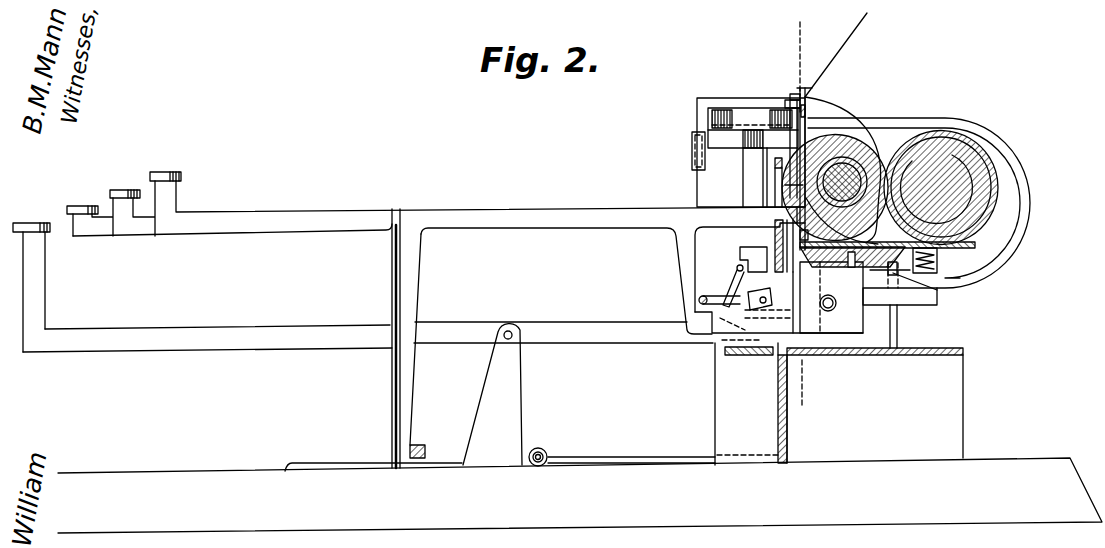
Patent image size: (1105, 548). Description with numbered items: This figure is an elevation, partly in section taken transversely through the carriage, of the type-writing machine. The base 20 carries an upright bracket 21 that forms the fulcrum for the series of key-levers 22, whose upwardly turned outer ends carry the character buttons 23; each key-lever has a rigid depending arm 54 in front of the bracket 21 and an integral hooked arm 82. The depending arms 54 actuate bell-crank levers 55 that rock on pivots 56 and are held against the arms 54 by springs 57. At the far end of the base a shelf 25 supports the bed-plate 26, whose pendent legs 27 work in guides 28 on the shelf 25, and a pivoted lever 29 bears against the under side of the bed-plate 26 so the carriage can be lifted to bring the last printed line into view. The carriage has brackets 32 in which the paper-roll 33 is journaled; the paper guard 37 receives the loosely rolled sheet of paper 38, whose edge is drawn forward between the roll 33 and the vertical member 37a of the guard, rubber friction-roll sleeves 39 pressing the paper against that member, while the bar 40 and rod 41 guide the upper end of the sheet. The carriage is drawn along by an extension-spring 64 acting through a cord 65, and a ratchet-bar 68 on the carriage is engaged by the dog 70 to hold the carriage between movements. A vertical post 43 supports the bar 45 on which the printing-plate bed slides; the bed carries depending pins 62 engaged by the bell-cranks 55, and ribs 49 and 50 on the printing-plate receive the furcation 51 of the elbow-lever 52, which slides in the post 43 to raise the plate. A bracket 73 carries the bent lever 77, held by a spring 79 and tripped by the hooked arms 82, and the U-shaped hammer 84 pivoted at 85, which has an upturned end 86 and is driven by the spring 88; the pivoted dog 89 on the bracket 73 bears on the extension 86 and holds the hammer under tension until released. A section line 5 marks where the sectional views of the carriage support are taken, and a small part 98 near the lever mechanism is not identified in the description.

The section line 5 is at (802, 217).
The base 20 is at (580, 495).
The upright bracket 21 is at (391, 292).
The key-levers 22 is at (486, 228).
The buttons 23 is at (168, 166).
The shelf 25 is at (940, 330).
The bed-plate 26 is at (893, 262).
The pendent legs 27 is at (883, 305).
The guides 28 is at (900, 332).
The pivoted lever 29 is at (438, 332).
The brackets 32 is at (875, 143).
The paper-roll 33 is at (842, 182).
The paper guard 37 is at (966, 241).
The vertical upstanding member 37a is at (852, 245).
The sheet of paper 38 is at (840, 52).
The rubber sleeve 39 is at (842, 160).
The bar 40 is at (806, 70).
The rod 41 is at (815, 97).
The vertical post 43 is at (753, 157).
The bar 45 is at (788, 102).
The rib 49 is at (797, 100).
The rib 50 is at (792, 96).
The furcation 51 is at (808, 108).
The elbow-lever 52 is at (696, 178).
The depending arms 54 is at (408, 375).
The bell-crank levers 55 is at (427, 445).
The pivots 56 is at (414, 462).
The springs 57 is at (541, 449).
The depending pins 62 is at (790, 178).
The extension-spring 64 is at (835, 309).
The cord or cable 65 is at (940, 291).
The ratchet-bar 68 is at (775, 243).
The dog 70 is at (838, 255).
The bracket 73 is at (912, 303).
The bent lever 77 is at (793, 241).
The spring 79 is at (748, 312).
The hooked arms 82 is at (682, 277).
The hammer 84 is at (1028, 205).
The pivot 85 is at (778, 295).
The upturned end 86 is at (748, 247).
The spring 88 is at (938, 259).
The pivoted dog 89 is at (729, 286).
The link 98 is at (760, 284).